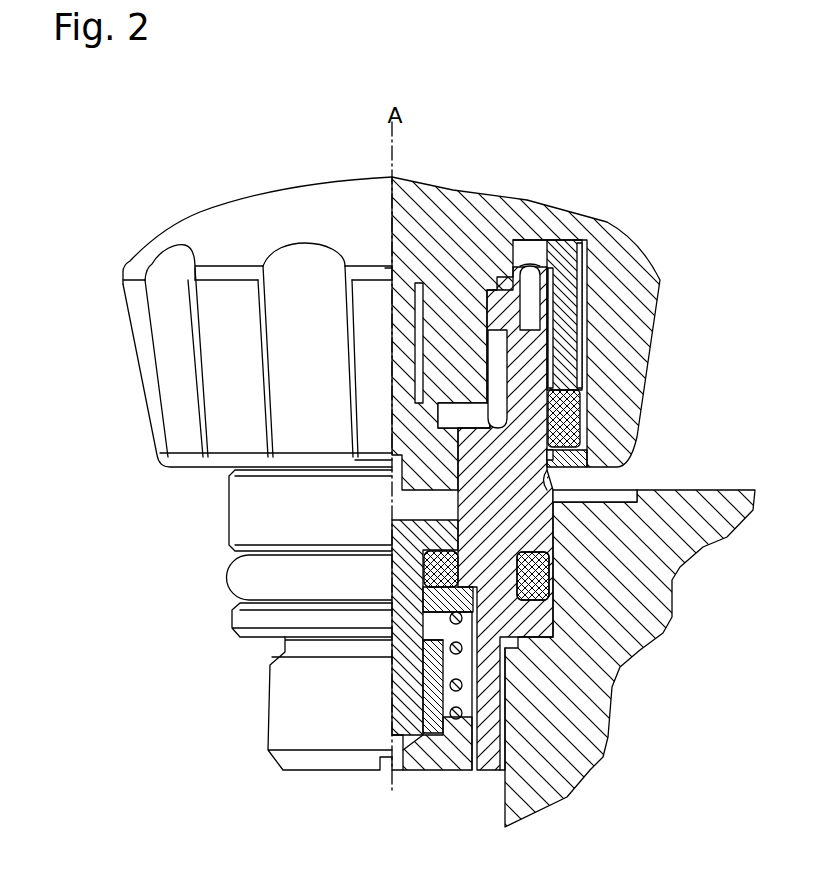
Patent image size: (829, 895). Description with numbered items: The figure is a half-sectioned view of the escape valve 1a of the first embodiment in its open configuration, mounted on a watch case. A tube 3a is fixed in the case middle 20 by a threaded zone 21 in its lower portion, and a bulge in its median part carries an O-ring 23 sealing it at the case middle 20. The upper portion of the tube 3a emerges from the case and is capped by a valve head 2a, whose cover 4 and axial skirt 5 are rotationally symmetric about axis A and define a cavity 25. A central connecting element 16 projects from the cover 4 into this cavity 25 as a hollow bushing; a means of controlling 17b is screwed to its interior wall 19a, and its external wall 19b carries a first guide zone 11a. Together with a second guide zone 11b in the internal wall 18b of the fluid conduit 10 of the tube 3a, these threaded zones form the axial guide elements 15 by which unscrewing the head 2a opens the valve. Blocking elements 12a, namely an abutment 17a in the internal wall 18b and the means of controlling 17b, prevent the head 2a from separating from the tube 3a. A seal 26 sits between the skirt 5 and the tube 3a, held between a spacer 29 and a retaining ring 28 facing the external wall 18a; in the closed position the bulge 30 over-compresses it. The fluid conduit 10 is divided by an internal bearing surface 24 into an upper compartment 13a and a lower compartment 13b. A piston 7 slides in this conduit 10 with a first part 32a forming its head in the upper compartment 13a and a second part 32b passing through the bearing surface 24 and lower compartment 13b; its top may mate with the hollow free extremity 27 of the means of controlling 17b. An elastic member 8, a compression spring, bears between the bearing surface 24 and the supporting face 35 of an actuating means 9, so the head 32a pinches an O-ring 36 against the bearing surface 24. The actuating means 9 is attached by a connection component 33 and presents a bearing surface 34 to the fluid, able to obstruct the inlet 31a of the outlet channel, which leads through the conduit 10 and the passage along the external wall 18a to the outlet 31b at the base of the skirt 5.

The escape valve 1a is at (150, 802).
The valve head 2a is at (551, 198).
The tube 3a is at (557, 527).
The cover 4 is at (281, 207).
The axial skirt 5 is at (626, 352).
The piston 7 is at (425, 612).
The elastic member 8 is at (448, 686).
The actuating means 9 is at (418, 740).
The fluid conduit 10 is at (405, 503).
The first guide zone 11a is at (555, 290).
The second guide zone 11b is at (558, 345).
The blocking elements 12a is at (83, 323).
The upper compartment 13a is at (432, 492).
The lower compartment 13b is at (507, 692).
The axial guide elements 15 is at (687, 203).
The central connecting element 16 is at (436, 335).
The abutment 17a is at (418, 460).
The means of controlling 17b is at (415, 383).
The external wall 18a is at (233, 607).
The internal wall 18b is at (400, 511).
The interior wall 19a is at (390, 273).
The external wall 19b is at (530, 256).
The case middle 20 is at (528, 795).
The threaded zone 21 is at (550, 778).
The O-ring 23 is at (552, 575).
The internal bearing surface 24 is at (545, 608).
The cavity 25 is at (532, 243).
The seal 26 is at (580, 407).
The free extremity 27 is at (436, 468).
The retaining ring 28 is at (588, 457).
The spacer 29 is at (557, 272).
The bulge 30 is at (660, 487).
The inlet 31a is at (397, 768).
The outlet 31b is at (552, 476).
The first part 32a is at (425, 541).
The second part 32b is at (548, 648).
The connection component 33 is at (522, 660).
The bearing surface 34 is at (463, 769).
The supporting face 35 is at (604, 752).
The O-ring 36 is at (430, 566).